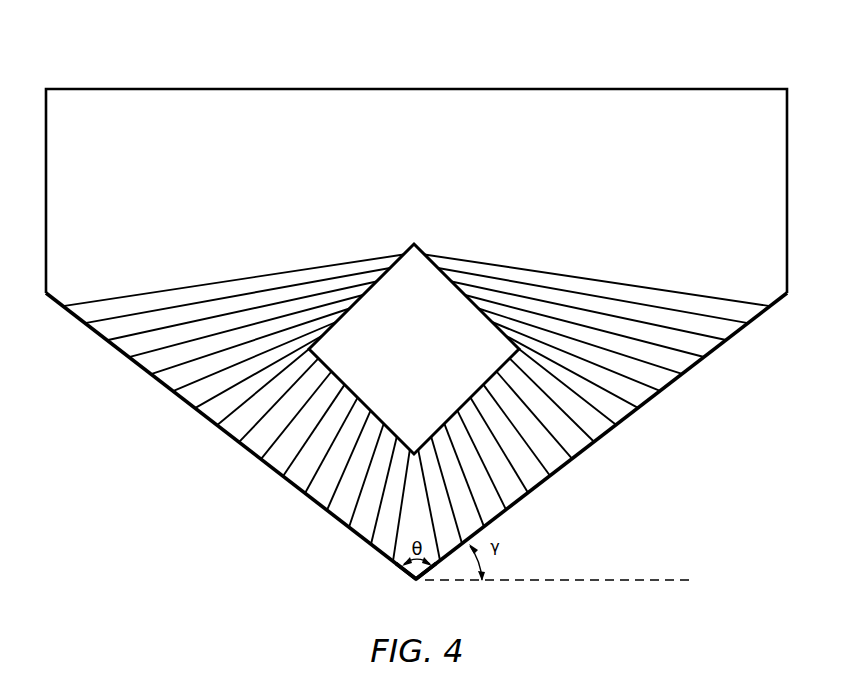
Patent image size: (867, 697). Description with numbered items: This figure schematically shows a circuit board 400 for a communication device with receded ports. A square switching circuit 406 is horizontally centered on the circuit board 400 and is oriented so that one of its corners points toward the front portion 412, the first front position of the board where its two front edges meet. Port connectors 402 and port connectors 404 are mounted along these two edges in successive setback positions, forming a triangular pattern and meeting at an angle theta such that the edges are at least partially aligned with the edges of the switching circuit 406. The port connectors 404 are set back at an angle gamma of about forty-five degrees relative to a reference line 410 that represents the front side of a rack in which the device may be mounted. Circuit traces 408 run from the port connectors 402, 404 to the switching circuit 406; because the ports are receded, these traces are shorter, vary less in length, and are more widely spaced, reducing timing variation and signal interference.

The circuit board 400 is at (176, 78).
The port connectors 402 is at (407, 587).
The port connectors 404 is at (426, 587).
The switching circuit 406 is at (393, 363).
The circuit traces 408 is at (575, 272).
The reference line 410 is at (584, 583).
The front portion 412 is at (412, 584).